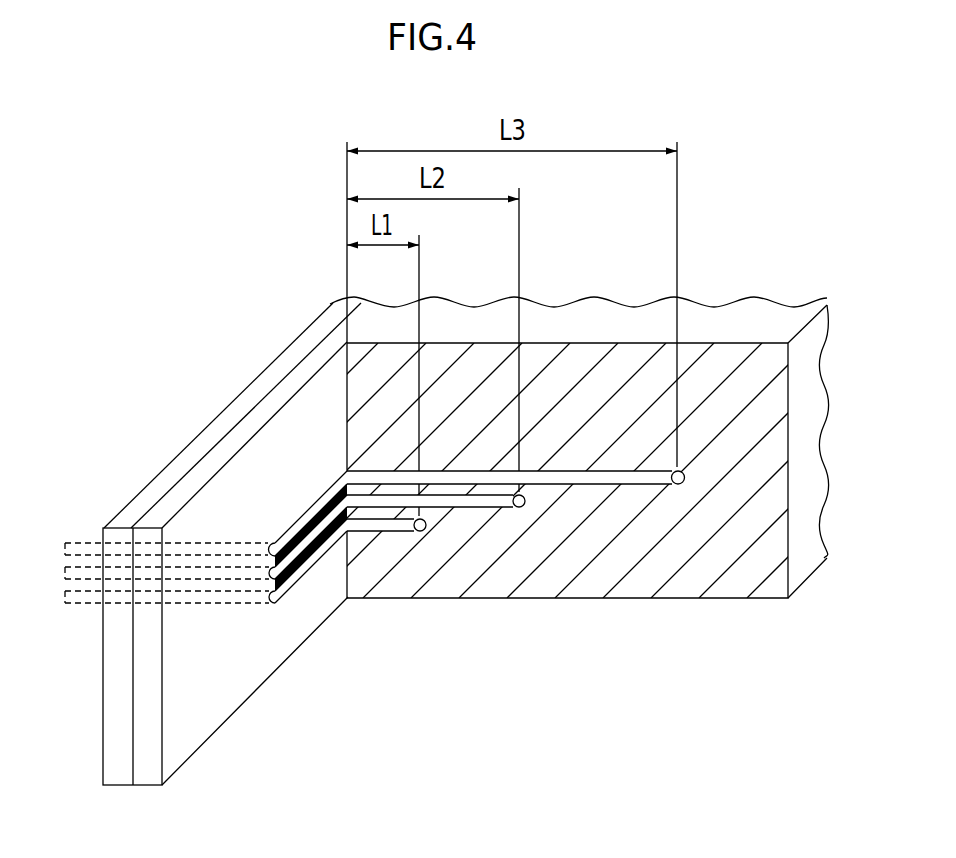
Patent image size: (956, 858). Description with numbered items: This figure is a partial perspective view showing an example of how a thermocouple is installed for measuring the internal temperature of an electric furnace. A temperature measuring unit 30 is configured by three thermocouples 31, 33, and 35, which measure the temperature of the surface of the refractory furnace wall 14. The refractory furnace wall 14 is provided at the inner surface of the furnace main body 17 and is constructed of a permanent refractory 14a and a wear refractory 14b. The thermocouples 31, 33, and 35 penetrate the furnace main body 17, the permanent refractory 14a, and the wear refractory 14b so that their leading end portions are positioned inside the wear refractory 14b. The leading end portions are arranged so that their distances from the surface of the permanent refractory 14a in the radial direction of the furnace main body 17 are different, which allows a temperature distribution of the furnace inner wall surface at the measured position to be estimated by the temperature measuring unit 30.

The refractory furnace wall 14 is at (191, 303).
The permanent refractory 14a is at (301, 374).
The wear refractory 14b is at (378, 330).
The furnace main body 17 is at (163, 483).
The temperature measuring unit 30 is at (580, 652).
The thermocouple 31 is at (402, 531).
The thermocouple 33 is at (480, 507).
The thermocouple 35 is at (558, 484).